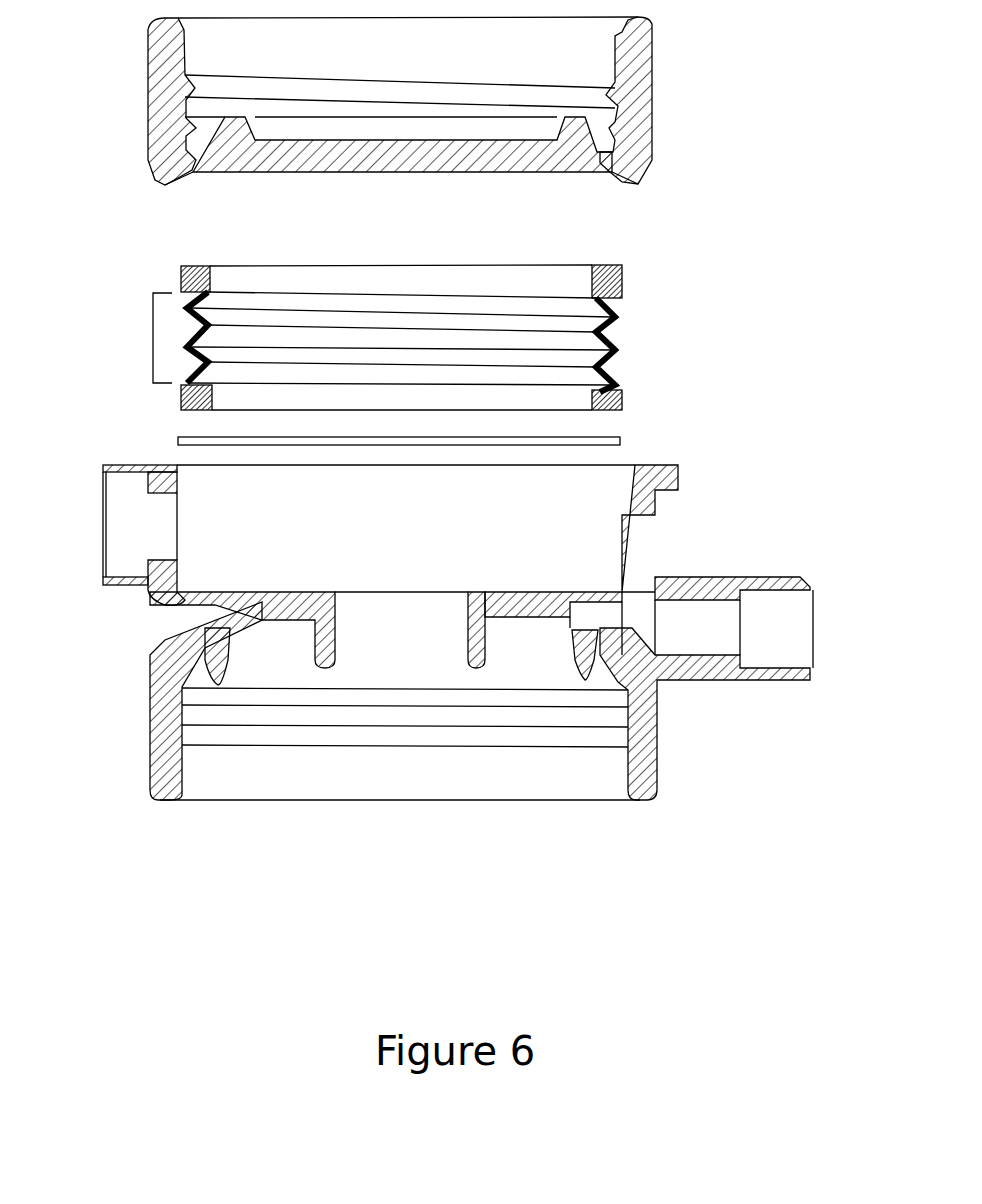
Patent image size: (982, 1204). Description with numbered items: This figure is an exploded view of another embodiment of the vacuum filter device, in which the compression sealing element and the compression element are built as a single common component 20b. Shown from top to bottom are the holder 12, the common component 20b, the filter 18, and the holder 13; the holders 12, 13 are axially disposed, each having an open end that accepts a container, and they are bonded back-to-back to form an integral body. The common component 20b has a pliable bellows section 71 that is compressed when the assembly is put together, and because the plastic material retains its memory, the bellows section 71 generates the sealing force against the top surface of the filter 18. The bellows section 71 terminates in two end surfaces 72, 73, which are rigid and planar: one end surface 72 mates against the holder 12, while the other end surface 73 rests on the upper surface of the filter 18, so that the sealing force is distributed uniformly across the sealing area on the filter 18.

The holder 12 is at (690, 109).
The holder 13 is at (690, 718).
The filter 18 is at (190, 437).
The common component 20b is at (506, 336).
The pliable bellows section 71 is at (152, 337).
The end surface 72 is at (622, 280).
The end surface 73 is at (622, 398).